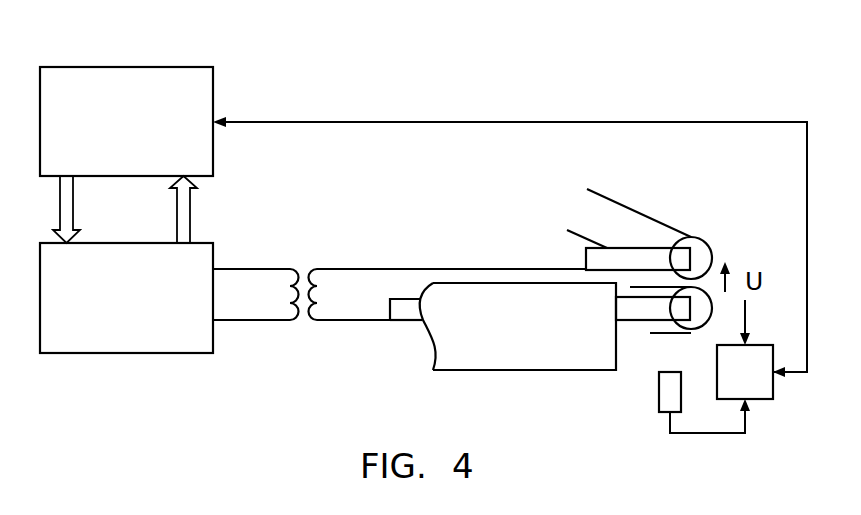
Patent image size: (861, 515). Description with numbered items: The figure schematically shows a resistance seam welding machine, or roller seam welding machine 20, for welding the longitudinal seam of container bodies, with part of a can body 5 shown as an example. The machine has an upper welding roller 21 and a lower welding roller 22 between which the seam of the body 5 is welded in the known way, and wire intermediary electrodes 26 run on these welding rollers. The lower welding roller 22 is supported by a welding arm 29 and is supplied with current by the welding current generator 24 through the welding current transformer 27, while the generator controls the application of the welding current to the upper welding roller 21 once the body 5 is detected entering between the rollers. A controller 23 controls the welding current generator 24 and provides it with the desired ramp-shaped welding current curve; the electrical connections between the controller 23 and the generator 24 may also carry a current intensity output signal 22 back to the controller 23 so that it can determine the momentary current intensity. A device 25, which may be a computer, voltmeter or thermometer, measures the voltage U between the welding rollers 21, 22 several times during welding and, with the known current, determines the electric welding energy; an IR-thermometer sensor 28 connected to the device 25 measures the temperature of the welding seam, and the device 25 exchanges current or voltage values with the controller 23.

The roller seam welding machine 20 is at (396, 96).
The controller 23 is at (94, 66).
The welding current generator 24 is at (199, 243).
The lower welding roller / current intensity output signal 22 is at (191, 203).
The welding current transformer 27 is at (289, 268).
The can body 5 is at (466, 356).
The welding arm 29 is at (630, 310).
The upper welding roller 21 is at (700, 252).
The wire intermediary electrodes 26 is at (633, 205).
The device 25 is at (753, 386).
The IR-thermometer sensor 28 is at (670, 392).